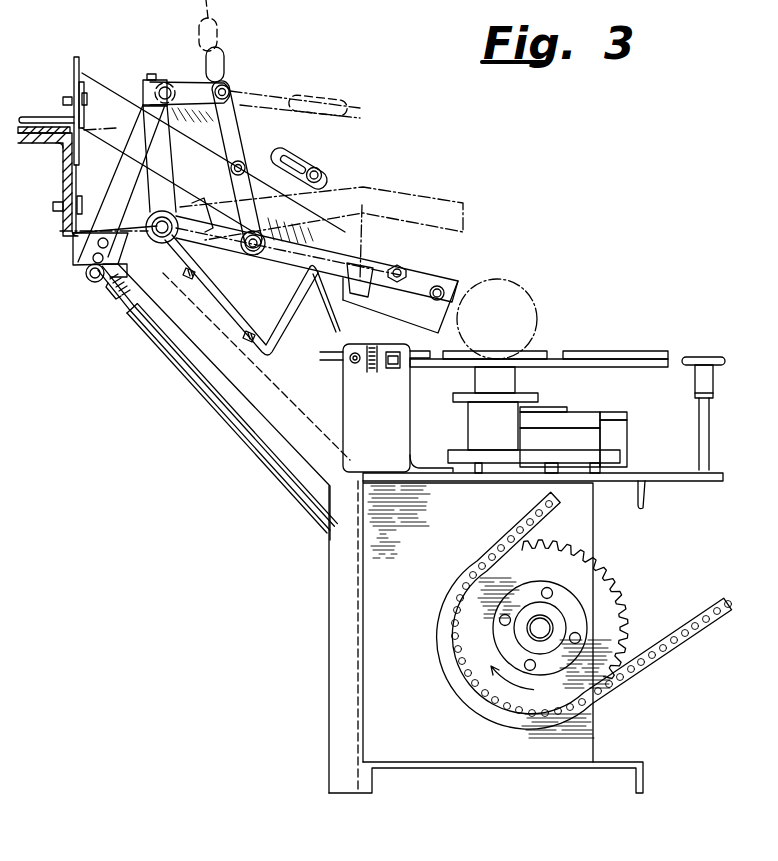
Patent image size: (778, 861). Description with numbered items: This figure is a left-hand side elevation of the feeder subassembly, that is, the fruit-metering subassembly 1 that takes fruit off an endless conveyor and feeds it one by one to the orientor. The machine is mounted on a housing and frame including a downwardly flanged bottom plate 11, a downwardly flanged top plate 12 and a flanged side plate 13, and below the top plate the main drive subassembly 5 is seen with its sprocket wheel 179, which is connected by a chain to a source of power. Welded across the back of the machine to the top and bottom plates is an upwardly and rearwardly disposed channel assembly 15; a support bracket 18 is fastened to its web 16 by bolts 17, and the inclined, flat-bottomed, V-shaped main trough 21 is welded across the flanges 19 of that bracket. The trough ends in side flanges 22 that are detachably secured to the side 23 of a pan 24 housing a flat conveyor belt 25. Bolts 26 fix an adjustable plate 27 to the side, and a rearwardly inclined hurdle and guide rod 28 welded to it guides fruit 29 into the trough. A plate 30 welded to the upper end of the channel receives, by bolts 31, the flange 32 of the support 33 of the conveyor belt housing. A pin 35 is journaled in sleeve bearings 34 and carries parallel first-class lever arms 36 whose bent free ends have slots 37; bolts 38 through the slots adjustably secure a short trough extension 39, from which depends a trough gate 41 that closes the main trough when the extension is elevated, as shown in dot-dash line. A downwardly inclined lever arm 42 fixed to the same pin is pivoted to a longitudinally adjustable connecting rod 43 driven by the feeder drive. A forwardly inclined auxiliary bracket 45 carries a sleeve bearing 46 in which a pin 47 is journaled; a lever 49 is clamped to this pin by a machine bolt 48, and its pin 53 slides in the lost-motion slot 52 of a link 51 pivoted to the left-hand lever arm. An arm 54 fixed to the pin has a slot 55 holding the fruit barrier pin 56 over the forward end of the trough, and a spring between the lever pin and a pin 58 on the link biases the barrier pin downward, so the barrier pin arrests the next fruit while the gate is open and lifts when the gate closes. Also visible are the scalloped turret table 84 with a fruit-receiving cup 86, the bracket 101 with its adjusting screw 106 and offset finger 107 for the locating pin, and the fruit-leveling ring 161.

The fruit-metering subassembly 1 is at (372, 122).
The main drive subassembly 5 is at (633, 574).
The bottom plate 11 is at (482, 764).
The top plate 12 is at (430, 480).
The side plate 13 is at (401, 598).
The channel assembly 15 is at (211, 353).
The web 16 is at (272, 366).
The bolts 17 is at (197, 271).
The support bracket 18 is at (284, 307).
The flanges 19 is at (198, 207).
The main trough 21 is at (165, 181).
The side flanges 22 is at (86, 128).
The side 23 is at (80, 66).
The pan 24 is at (36, 136).
The conveyor belt 25 is at (42, 117).
The bolts 26 is at (86, 95).
The adjustable plate 27 is at (66, 96).
The hurdle and guide rod 28 is at (62, 108).
The fruit 29 is at (527, 290).
The plate 30 is at (82, 206).
The bolts 31 is at (53, 207).
The flange 32 is at (63, 180).
The support 33 is at (60, 146).
The sleeve bearings 34 is at (158, 214).
The pin 35 is at (157, 238).
The lever arms 36 is at (274, 252).
The slots 37 is at (445, 292).
The bolts 38 is at (402, 270).
The trough extension 39 is at (465, 205).
The trough gate 41 is at (330, 316).
The lever arm 42 is at (100, 282).
The connecting rod 43 is at (176, 374).
The auxiliary bracket 45 is at (117, 170).
The sleeve bearing 46 is at (168, 85).
The pin 47 is at (162, 103).
The machine bolt 48 is at (152, 75).
The lever 49 is at (203, 103).
The link 51 is at (240, 116).
The lost-motion slot 52 is at (228, 75).
The pin 53 is at (230, 92).
The arm 54 is at (314, 98).
The slot 55 is at (299, 165).
The fruit barrier pin 56 is at (322, 178).
The pin 58 is at (246, 170).
The turret table 84 is at (553, 367).
The fruit-receiving cup 86 is at (628, 352).
The bracket 101 is at (365, 428).
The adjusting screw 106 is at (349, 364).
The offset finger 107 is at (386, 368).
The fruit-leveling ring 161 is at (700, 358).
The sprocket wheel 179 is at (623, 606).